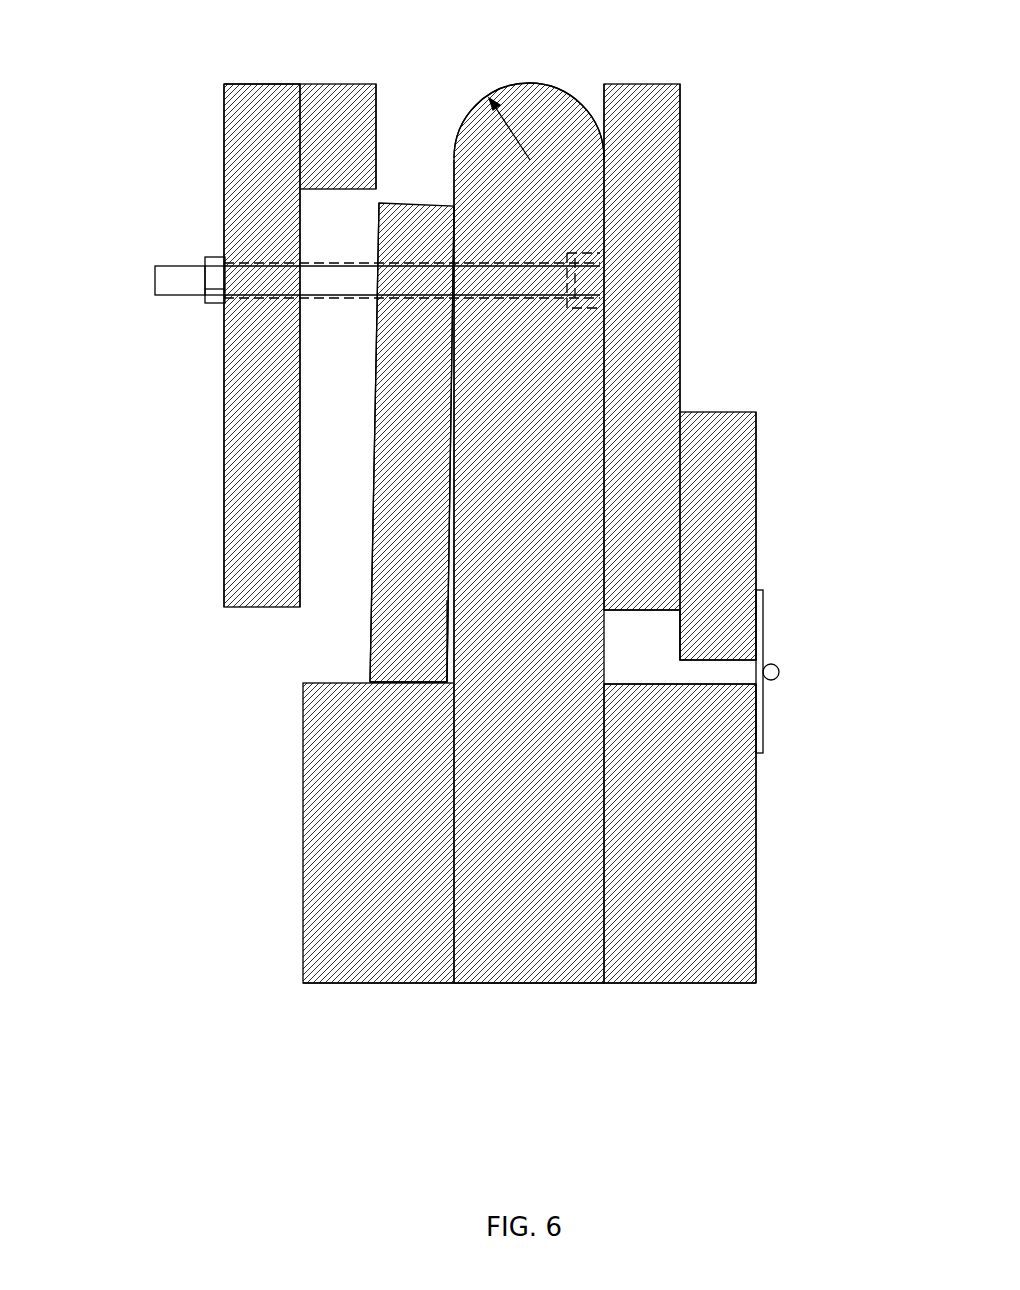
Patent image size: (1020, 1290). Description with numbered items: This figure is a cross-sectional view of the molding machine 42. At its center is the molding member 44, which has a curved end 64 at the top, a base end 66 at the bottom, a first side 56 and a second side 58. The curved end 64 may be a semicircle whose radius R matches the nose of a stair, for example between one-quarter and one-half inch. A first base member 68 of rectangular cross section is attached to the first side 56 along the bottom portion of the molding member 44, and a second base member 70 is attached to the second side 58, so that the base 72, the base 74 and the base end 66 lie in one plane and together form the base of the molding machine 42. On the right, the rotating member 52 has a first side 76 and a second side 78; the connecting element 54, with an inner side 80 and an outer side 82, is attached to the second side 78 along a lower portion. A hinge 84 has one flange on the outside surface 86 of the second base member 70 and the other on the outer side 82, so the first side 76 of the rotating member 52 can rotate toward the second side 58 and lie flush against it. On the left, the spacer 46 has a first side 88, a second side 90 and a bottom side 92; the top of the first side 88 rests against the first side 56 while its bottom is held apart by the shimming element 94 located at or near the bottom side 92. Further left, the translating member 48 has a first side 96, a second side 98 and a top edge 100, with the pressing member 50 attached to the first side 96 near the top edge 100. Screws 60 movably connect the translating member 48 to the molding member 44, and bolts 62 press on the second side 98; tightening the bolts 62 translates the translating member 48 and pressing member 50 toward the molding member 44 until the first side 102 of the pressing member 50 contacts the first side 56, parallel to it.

The molding machine 42 is at (98, 49).
The molding member 44 is at (516, 356).
The spacer 46 is at (403, 356).
The translating member 48 is at (253, 160).
The pressing member 50 is at (328, 143).
The rotating member 52 is at (636, 146).
The connecting element 54 is at (737, 411).
The first side of the molding member 56 is at (453, 179).
The second side of the molding member 58 is at (604, 662).
The screw 60 is at (155, 296).
The bolt 62 is at (205, 304).
The curved end 64 is at (515, 81).
The base end 66 is at (529, 983).
The first base member 68 is at (303, 870).
The second base member 70 is at (664, 821).
The base of the first base member 72 is at (385, 983).
The base of the second base member 74 is at (683, 983).
The first side of the rotating member 76 is at (603, 90).
The second side of the rotating member 78 is at (680, 270).
The inner side of the connecting element 80 is at (680, 631).
The outer side of the connecting element 82 is at (757, 497).
The hinge 84 is at (764, 637).
The outside surface of the second base member 86 is at (757, 860).
The first side of the spacer 88 is at (451, 550).
The second side of the spacer 90 is at (375, 401).
The bottom side of the spacer 92 is at (380, 682).
The shimming element 94 is at (445, 660).
The first side of the translating member 96 is at (303, 503).
The second side of the translating member 98 is at (224, 468).
The top edge of the translating member 100 is at (262, 84).
The first side of the pressing member 102 is at (377, 112).
The radius R is at (509, 129).